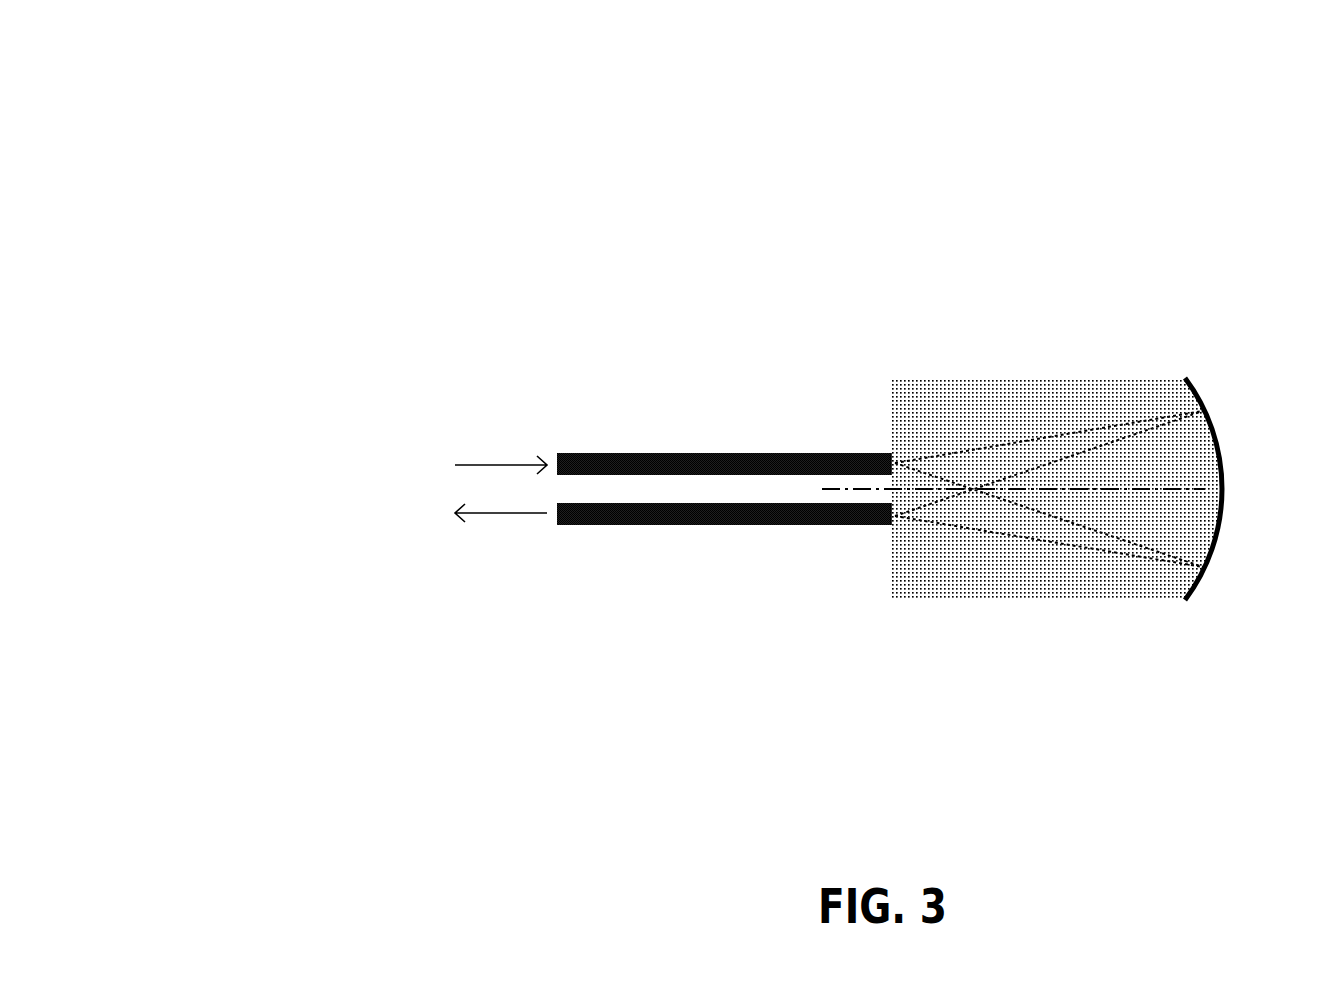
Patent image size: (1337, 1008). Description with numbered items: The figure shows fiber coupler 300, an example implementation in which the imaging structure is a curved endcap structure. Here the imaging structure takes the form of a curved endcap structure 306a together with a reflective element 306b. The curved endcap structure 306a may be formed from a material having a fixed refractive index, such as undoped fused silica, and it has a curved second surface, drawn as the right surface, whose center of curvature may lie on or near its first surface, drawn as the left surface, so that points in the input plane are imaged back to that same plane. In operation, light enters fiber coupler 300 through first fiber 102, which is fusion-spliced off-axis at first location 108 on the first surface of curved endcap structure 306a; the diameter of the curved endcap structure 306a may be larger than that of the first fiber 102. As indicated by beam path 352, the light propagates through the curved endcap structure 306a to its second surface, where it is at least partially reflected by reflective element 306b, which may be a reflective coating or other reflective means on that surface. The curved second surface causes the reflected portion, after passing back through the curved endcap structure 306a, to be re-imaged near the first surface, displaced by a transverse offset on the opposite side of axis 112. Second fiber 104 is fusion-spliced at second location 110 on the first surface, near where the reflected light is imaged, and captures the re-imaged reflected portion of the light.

The fiber coupler 300 is at (368, 30).
The first fiber 102 is at (667, 452).
The second fiber 104 is at (667, 526).
The first location 108 is at (890, 463).
The second location 110 is at (890, 516).
The axis 112 is at (820, 489).
The beam path 352 is at (1019, 507).
The curved endcap structure 306a is at (1079, 588).
The reflective element 306b is at (1224, 488).